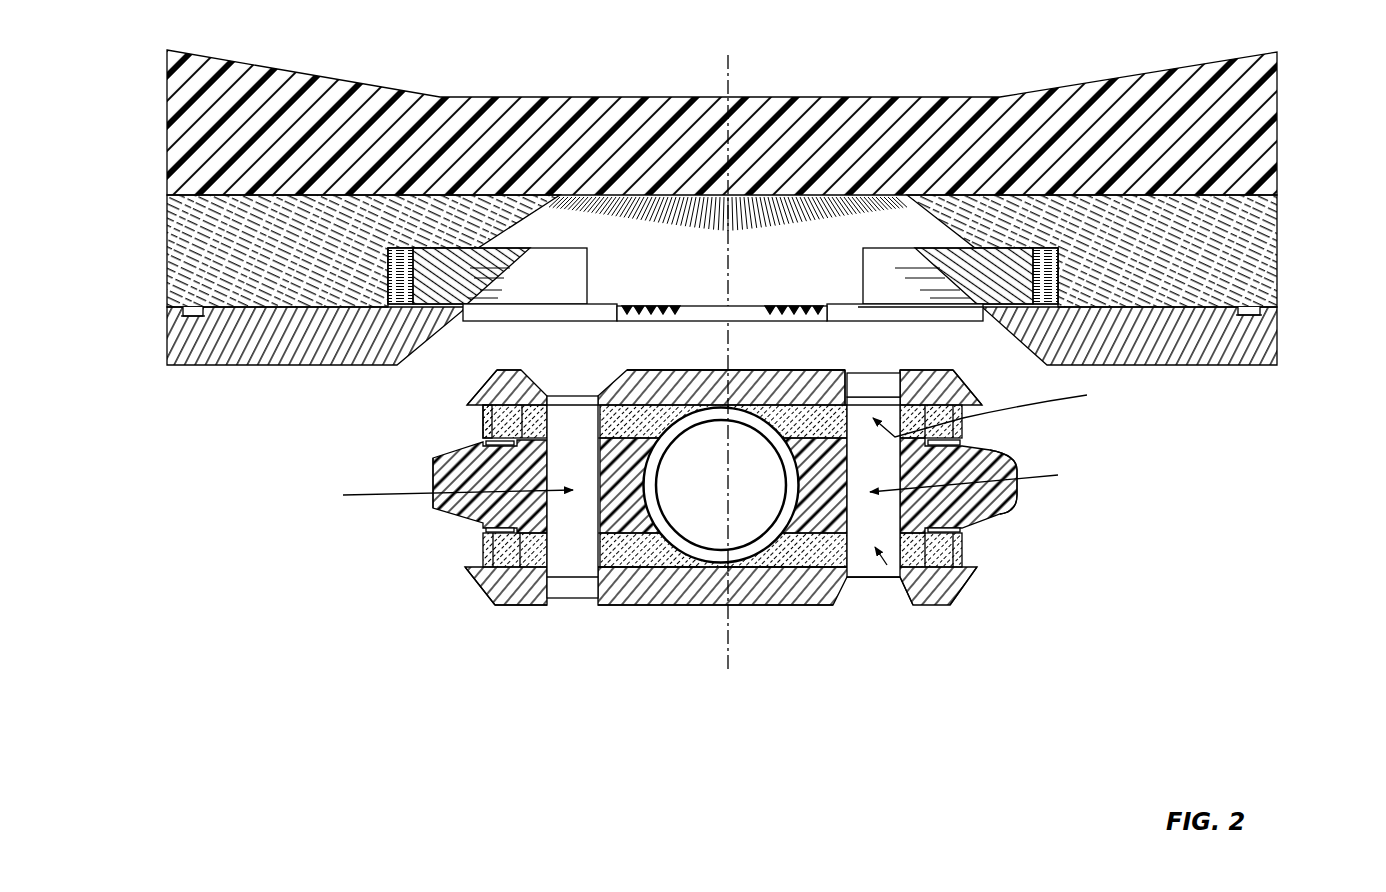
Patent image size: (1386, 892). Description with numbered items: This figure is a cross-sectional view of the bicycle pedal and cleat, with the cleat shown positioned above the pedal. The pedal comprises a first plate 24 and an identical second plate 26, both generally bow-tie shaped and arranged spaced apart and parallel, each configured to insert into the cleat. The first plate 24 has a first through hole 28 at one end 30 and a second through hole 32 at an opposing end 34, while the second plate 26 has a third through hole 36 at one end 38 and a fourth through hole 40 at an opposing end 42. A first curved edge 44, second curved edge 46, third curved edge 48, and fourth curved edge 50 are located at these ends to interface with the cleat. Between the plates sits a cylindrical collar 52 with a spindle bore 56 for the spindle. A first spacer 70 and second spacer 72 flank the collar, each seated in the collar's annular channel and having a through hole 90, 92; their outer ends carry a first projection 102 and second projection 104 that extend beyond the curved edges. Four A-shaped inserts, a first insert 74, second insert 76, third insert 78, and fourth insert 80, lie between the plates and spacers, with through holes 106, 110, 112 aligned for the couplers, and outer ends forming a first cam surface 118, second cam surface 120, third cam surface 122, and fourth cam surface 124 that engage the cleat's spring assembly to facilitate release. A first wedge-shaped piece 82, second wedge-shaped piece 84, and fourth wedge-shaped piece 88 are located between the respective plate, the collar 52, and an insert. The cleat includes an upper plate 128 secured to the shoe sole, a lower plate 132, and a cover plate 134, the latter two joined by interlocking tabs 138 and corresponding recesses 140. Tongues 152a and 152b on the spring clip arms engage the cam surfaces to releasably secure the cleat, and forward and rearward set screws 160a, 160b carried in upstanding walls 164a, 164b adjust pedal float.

The first plate 24 is at (705, 372).
The second plate 26 is at (730, 608).
The first through hole 28 is at (567, 313).
The one end of the first plate 30 is at (497, 372).
The second through hole 32 is at (872, 368).
The opposing end of the first plate 34 is at (951, 372).
The third through hole 36 is at (873, 610).
The one end of the second plate 38 is at (947, 607).
The fourth through hole 40 is at (571, 618).
The opposing end of the second plate 42 is at (496, 606).
The first curved edge 44 is at (470, 398).
The second curved edge 46 is at (980, 400).
The third curved edge 48 is at (978, 572).
The fourth curved edge 50 is at (470, 568).
The cylindrical collar 52 is at (707, 505).
The spindle bore 56 is at (702, 558).
The first spacer 70 is at (443, 458).
The second spacer 72 is at (1005, 452).
The first insert 74 is at (483, 428).
The second insert 76 is at (483, 553).
The third insert 78 is at (965, 424).
The fourth insert 80 is at (963, 553).
The first wedge-shaped piece 82 is at (657, 377).
The second wedge-shaped piece 84 is at (665, 568).
The fourth wedge-shaped piece 88 is at (738, 566).
The through hole of the first spacer 90 is at (436, 497).
The through hole of the second spacer 92 is at (980, 479).
The first projection 102 is at (432, 508).
The second projection 104 is at (1015, 498).
The through hole of the first insert 106 is at (575, 423).
The through hole of the third insert 110 is at (963, 445).
The through hole of the fourth insert 112 is at (878, 608).
The first cam surface 118 is at (505, 423).
The second cam surface 120 is at (521, 612).
The third cam surface 122 is at (1001, 410).
The fourth cam surface 124 is at (965, 590).
The upper plate 128 is at (1283, 152).
The lower plate 132 is at (1283, 258).
The cover plate 134 is at (1252, 346).
The interlocking tabs 138 is at (185, 311).
The recesses 140 is at (186, 319).
The forward tongue 152a is at (462, 296).
The rearward tongue 152b is at (958, 266).
The forward set screw 160a is at (648, 316).
The rearward set screw 160b is at (810, 313).
The forward upstanding wall 164a is at (622, 310).
The rearward upstanding wall 164b is at (887, 313).